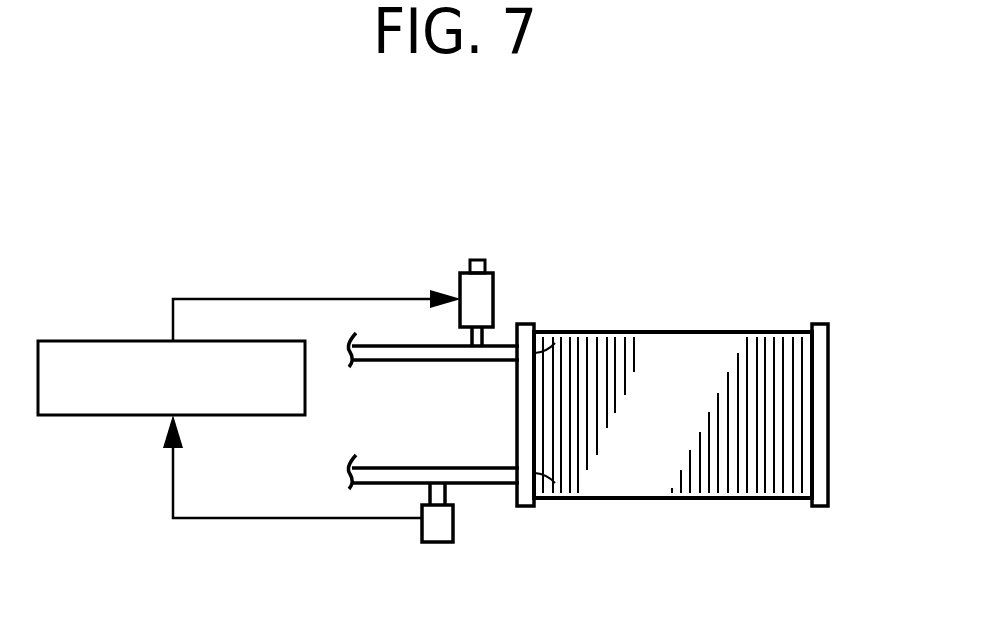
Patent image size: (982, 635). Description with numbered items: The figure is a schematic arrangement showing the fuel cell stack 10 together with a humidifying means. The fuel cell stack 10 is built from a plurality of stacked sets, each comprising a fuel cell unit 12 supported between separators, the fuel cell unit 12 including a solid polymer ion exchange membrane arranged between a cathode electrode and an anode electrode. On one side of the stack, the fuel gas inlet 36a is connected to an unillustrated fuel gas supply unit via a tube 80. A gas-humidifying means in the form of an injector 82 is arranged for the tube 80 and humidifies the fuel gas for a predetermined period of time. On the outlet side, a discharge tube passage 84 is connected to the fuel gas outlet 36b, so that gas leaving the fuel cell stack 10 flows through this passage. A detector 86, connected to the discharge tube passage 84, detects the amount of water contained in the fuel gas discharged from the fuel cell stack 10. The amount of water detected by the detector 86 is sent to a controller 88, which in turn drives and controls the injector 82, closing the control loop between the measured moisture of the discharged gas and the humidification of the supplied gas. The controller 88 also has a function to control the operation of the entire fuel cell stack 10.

The fuel cell stack 10 is at (693, 133).
The fuel cell unit 12 is at (677, 328).
The fuel gas inlet 36a is at (567, 333).
The fuel gas outlet 36b is at (565, 500).
The tube 80 is at (412, 362).
The injector 82 is at (475, 259).
The discharge tube passage 84 is at (475, 467).
The detector 86 is at (437, 545).
The controller 88 is at (103, 341).